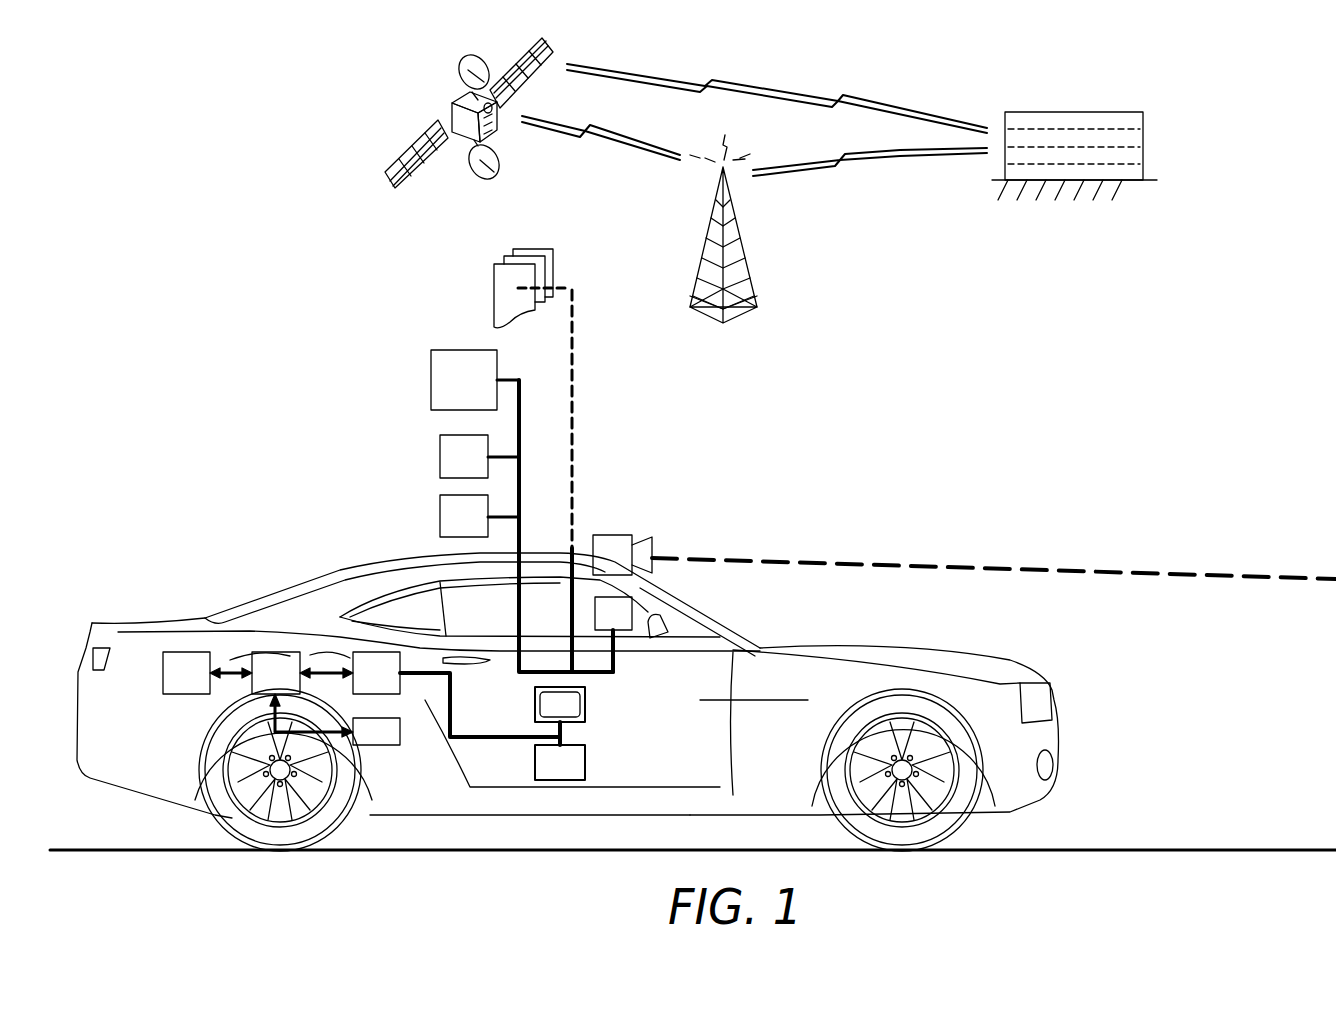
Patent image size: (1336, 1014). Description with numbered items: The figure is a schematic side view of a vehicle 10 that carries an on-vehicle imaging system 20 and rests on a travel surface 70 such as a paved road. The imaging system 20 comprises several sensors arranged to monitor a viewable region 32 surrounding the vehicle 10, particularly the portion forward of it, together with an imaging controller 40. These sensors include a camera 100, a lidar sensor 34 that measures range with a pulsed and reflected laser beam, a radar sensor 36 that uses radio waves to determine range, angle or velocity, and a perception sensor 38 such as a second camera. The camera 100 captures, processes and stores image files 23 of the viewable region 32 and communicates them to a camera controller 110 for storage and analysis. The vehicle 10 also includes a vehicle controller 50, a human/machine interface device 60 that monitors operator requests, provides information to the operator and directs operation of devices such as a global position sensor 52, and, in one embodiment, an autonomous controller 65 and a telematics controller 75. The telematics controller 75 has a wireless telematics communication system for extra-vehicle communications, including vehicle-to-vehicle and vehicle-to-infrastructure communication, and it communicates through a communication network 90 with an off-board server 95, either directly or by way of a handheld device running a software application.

The vehicle 10 is at (947, 632).
The on-vehicle imaging system 20 is at (563, 616).
The image files 23 is at (494, 288).
The viewable region 32 is at (781, 554).
The lidar sensor 34 is at (478, 394).
The radar sensor 36 is at (478, 470).
The perception sensor 38 is at (478, 530).
The imaging controller 40 is at (632, 615).
The vehicle controller 50 is at (276, 652).
The global position sensor 52 is at (535, 760).
The human/machine interface device 60 is at (535, 712).
The autonomous controller 65 is at (378, 746).
The travel surface 70 is at (1132, 846).
The telematics controller 75 is at (187, 652).
The communication network 90 is at (590, 206).
The off-board server 95 is at (1145, 137).
The camera 100 is at (633, 533).
The camera controller 110 is at (375, 652).